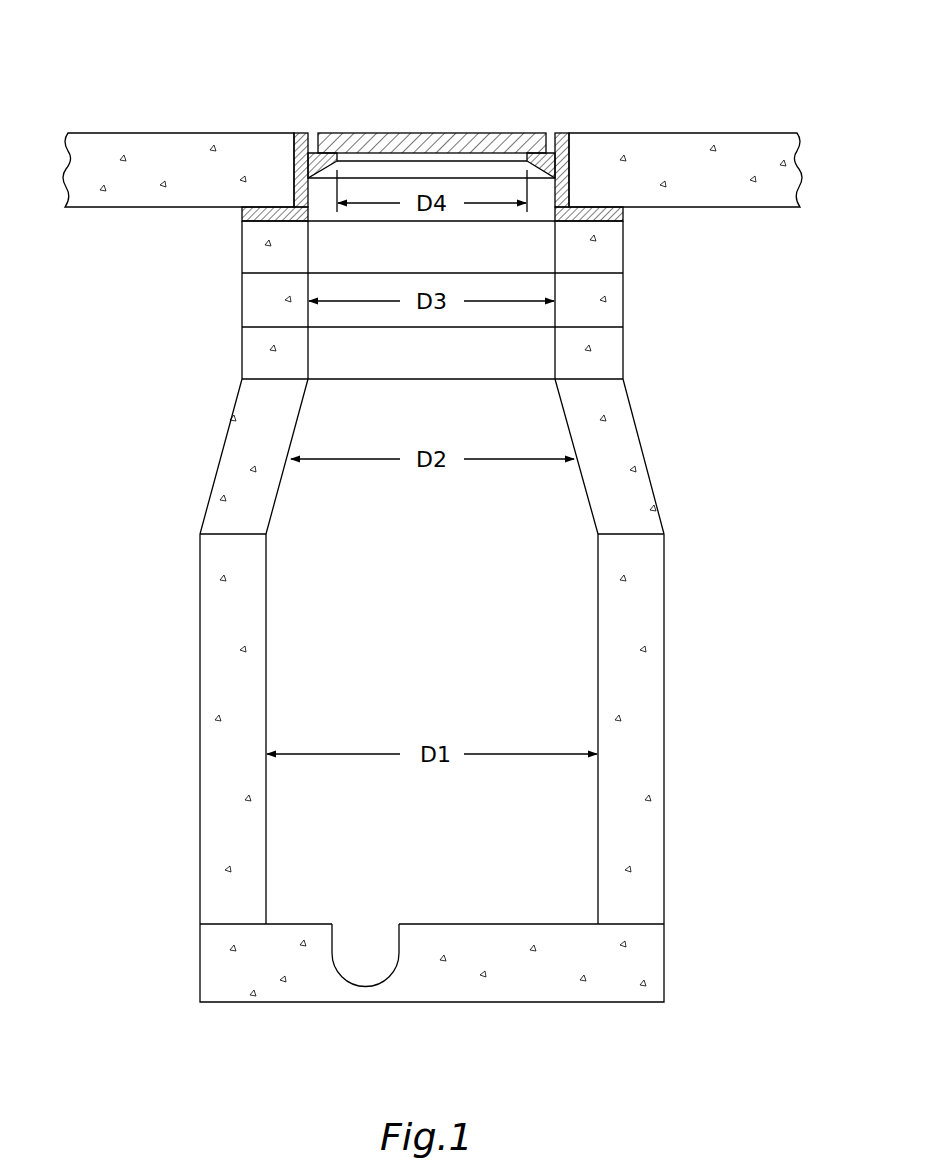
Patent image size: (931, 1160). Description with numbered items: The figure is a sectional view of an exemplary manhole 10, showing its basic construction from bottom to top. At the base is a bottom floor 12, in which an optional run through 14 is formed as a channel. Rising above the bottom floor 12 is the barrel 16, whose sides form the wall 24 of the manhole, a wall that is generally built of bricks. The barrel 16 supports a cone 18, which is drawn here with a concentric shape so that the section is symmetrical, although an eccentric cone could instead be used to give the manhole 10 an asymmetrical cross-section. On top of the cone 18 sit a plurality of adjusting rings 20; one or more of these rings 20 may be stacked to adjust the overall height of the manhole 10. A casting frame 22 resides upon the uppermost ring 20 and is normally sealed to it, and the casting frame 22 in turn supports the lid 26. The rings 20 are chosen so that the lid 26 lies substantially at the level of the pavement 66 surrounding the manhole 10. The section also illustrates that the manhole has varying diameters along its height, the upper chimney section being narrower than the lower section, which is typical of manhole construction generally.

The manhole 10 is at (308, 42).
The bottom floor 12 is at (497, 937).
The run through 14 is at (367, 957).
The barrel 16 is at (655, 646).
The cone 18 is at (267, 498).
The adjusting rings 20 is at (610, 263).
The casting frame 22 is at (300, 133).
The wall 24 is at (258, 647).
The lid 26 is at (460, 133).
The pavement 66 is at (655, 133).